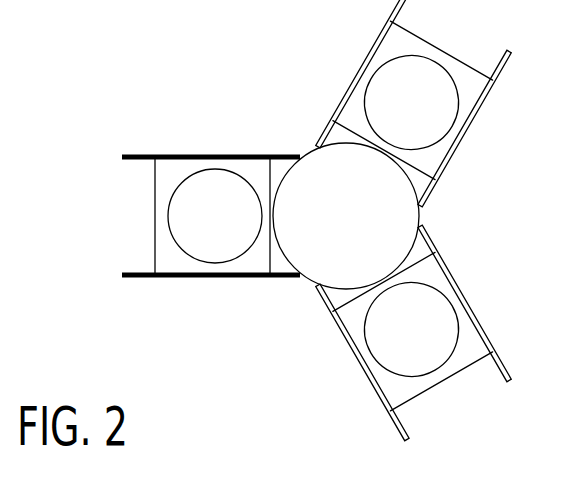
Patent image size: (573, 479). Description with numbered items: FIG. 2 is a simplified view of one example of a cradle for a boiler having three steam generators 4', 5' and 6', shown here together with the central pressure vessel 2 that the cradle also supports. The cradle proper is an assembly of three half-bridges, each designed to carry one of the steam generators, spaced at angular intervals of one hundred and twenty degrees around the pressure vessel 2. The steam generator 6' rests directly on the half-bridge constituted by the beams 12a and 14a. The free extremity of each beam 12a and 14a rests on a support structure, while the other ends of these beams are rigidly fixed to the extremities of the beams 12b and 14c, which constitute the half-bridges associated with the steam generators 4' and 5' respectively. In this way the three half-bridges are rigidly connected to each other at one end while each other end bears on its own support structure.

The central ball 2 is at (394, 221).
The beam 12a is at (143, 157).
The beam 14a is at (208, 279).
The steam generator 6' is at (215, 180).
The beam 12b is at (362, 78).
The steam generator 4' is at (425, 83).
The beam 14c is at (358, 354).
The steam generator 5' is at (423, 344).